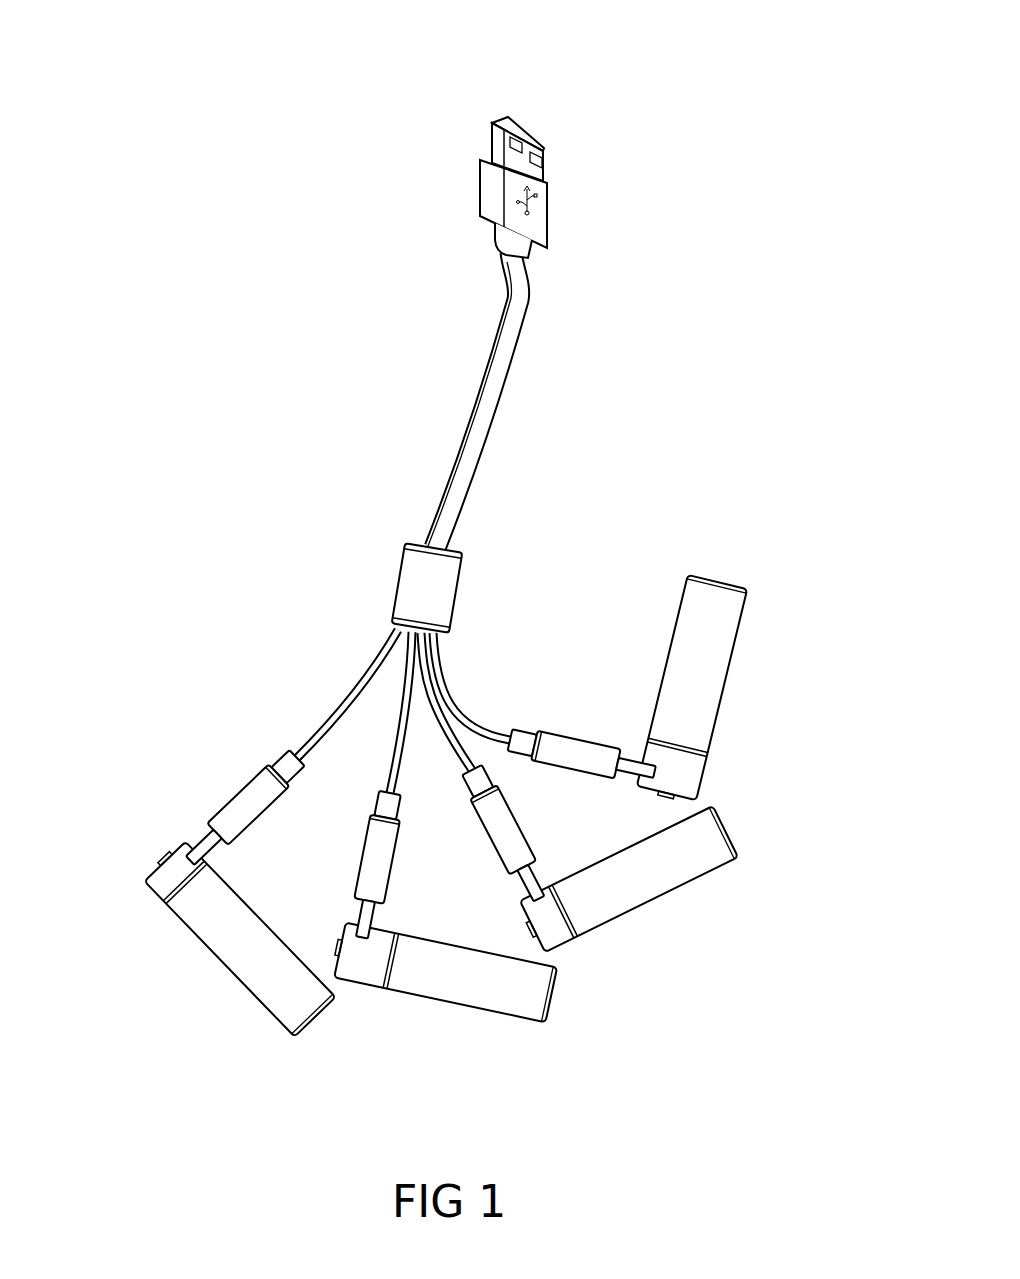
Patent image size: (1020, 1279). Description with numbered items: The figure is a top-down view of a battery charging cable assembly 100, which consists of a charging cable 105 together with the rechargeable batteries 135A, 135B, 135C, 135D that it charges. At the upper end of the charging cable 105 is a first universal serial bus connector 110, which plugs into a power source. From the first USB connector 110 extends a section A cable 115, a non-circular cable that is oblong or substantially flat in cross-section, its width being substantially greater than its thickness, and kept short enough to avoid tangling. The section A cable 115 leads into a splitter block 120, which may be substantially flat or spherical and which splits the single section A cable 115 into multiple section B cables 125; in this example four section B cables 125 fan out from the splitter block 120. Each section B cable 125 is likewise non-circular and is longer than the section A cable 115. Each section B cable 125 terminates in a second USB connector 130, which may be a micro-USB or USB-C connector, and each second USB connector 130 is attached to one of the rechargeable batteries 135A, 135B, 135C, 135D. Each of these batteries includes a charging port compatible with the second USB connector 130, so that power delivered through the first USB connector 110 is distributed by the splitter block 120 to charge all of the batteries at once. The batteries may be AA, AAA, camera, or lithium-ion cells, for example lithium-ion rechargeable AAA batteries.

The battery charging cable assembly 100 is at (289, 62).
The charging cable 105 is at (365, 366).
The first universal serial bus (USB) connector 110 is at (550, 213).
The section A cable 115 is at (515, 375).
The splitter block 120 is at (460, 593).
The section B cable 125 is at (372, 688).
The second USB connector 130 is at (252, 783).
The rechargeable battery 135A is at (202, 948).
The rechargeable battery 135B is at (420, 997).
The rechargeable battery 135C is at (635, 913).
The rechargeable battery 135D is at (740, 630).